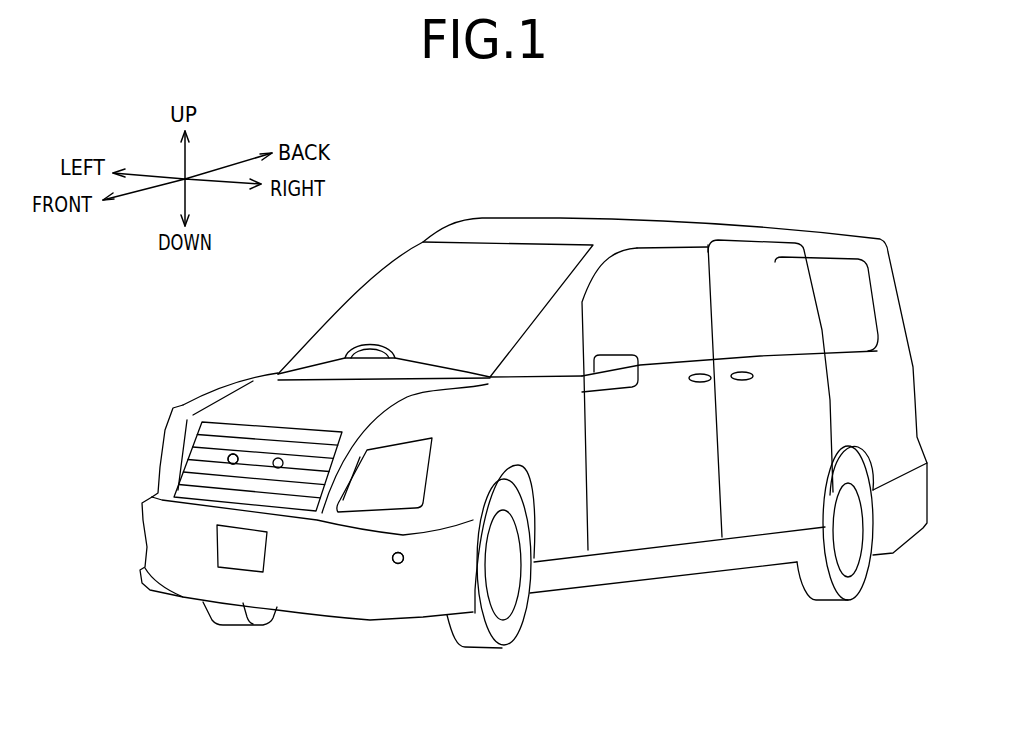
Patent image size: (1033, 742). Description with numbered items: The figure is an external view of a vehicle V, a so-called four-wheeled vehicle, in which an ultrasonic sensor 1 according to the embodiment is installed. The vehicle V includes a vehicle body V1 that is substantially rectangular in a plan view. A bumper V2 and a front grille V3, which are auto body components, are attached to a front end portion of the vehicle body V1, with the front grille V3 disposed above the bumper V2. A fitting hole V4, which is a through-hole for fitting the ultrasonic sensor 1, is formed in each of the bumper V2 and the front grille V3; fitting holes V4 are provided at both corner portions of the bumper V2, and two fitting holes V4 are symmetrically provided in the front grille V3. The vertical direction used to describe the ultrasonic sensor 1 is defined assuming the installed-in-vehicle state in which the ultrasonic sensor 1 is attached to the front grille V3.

The vehicle V is at (901, 226).
The vehicle body V1 is at (675, 568).
The bumper V2 is at (433, 595).
The front grille V3 is at (193, 480).
The fitting hole V4 is at (232, 454).
The ultrasonic sensor 1 is at (238, 455).